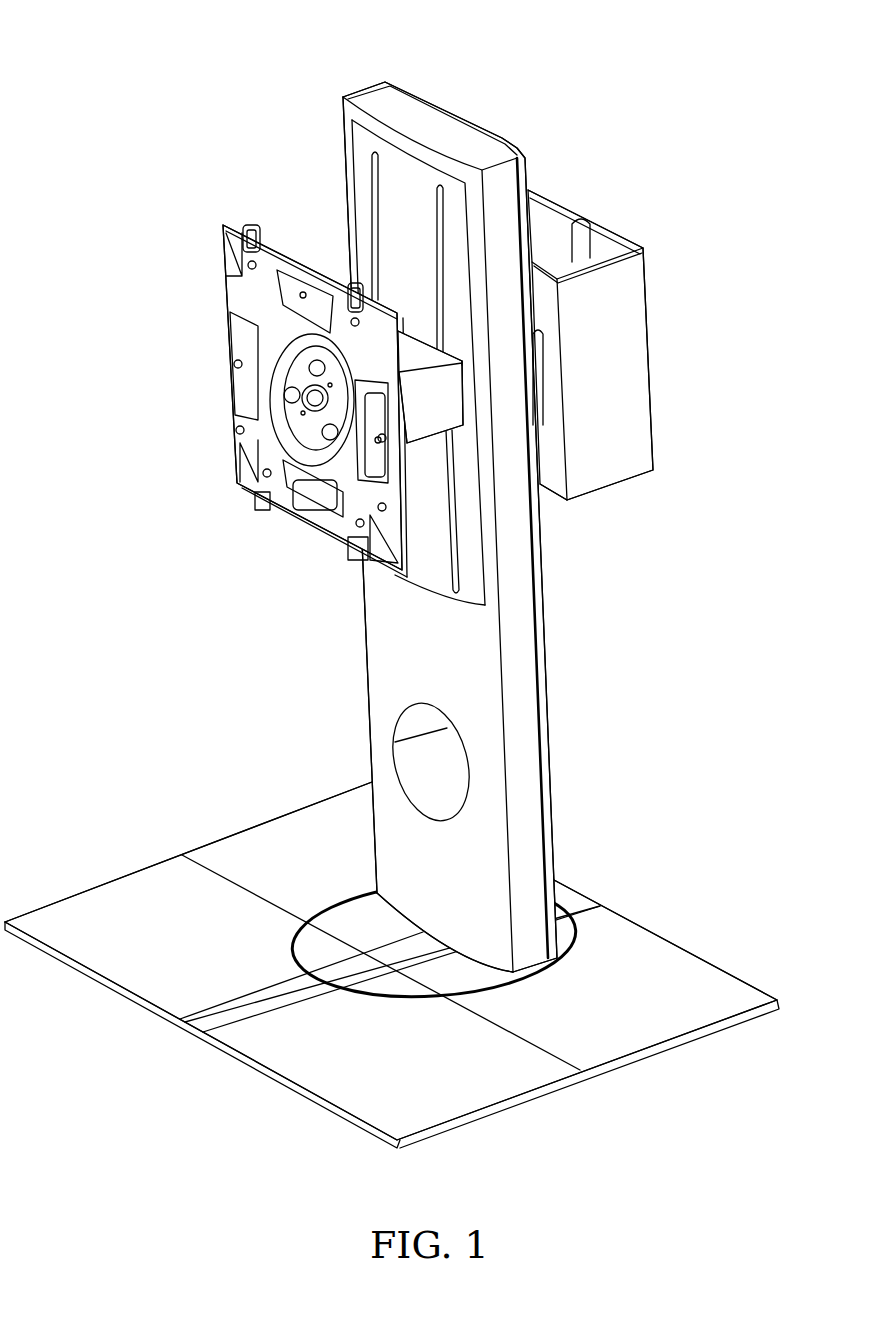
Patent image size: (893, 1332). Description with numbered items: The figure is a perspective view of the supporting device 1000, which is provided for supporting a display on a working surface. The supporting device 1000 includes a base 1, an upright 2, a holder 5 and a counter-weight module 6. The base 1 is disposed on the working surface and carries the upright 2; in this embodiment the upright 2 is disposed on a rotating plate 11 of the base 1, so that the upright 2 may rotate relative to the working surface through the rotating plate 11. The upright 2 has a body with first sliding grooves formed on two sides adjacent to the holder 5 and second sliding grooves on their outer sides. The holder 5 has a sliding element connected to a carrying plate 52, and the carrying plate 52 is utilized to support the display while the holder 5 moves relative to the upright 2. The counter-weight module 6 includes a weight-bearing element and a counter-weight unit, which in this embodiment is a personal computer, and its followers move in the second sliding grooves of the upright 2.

The supporting device 1000 is at (166, 33).
The base 1 is at (688, 975).
The rotating plate 11 is at (573, 927).
The upright 2 is at (537, 630).
The holder 5 is at (305, 401).
The carrying plate 52 is at (237, 290).
The counter-weight module 6 is at (618, 210).